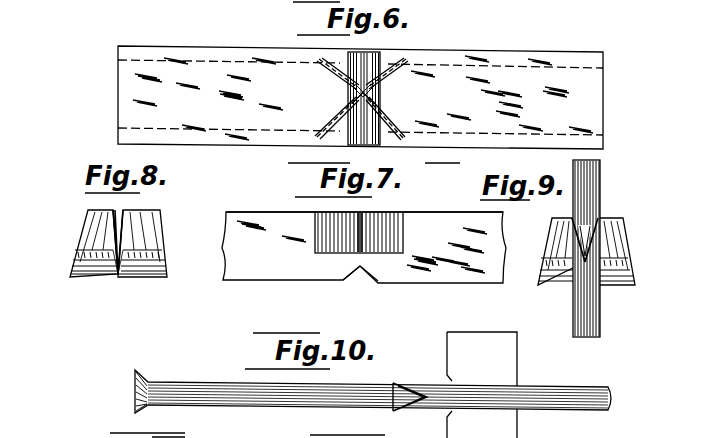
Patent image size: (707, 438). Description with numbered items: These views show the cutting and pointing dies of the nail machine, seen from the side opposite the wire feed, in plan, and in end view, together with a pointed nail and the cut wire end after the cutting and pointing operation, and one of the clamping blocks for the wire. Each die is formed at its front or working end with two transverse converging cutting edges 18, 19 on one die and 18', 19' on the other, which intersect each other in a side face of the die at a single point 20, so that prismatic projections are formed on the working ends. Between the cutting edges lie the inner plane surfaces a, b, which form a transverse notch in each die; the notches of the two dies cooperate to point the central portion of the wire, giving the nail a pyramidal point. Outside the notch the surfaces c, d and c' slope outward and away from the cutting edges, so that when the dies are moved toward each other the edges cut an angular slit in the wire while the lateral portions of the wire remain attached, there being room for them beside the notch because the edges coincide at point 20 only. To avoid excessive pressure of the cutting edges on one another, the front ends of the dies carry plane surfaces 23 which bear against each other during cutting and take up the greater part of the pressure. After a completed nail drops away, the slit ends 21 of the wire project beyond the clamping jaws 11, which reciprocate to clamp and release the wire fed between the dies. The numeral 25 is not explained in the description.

In FIG. 10, the clamping jaws 11 is at (502, 436).
In FIG. 6, the cutting edge 18 is at (307, 56).
In FIG. 7, the cutting edge 18 is at (319, 283).
In FIG. 8, the cutting edge 18 is at (94, 262).
In FIG. 9, the cutting edge 18 is at (553, 267).
In FIG. 6, the cutting edge 18' is at (418, 58).
In FIG. 6, the cutting edge 19 is at (307, 131).
In FIG. 8, the cutting edge 19 is at (163, 242).
In FIG. 9, the cutting edge 19 is at (628, 256).
In FIG. 6, the cutting edge 19' is at (405, 131).
In FIG. 7, the cutting edge 19' is at (392, 286).
In FIG. 6, the intersection point 20 is at (364, 98).
In FIG. 7, the intersection point 20 is at (362, 217).
In FIG. 8, the intersection point 20 is at (112, 209).
In FIG. 9, the slit ends 21 is at (600, 231).
In FIG. 10, the slit ends 21 is at (422, 388).
In FIG. 8, the plane surfaces 23 is at (78, 253).
In FIG. 9, the plane surfaces 23 is at (563, 260).
In FIG. 6, the element 25 is at (448, 6).
In FIG. 8, the inner surface a is at (118, 276).
In FIG. 9, the inner surface a is at (582, 265).
In FIG. 8, the inner surface b is at (133, 260).
In FIG. 9, the inner surface b is at (598, 262).
In FIG. 7, the inclined surface c is at (276, 206).
In FIG. 8, the inclined surface c is at (81, 243).
In FIG. 9, the inclined surface c is at (555, 246).
In FIG. 6, the inclined surface c' is at (477, 6).
In FIG. 7, the inclined surface c' is at (447, 212).
In FIG. 8, the inclined surface d is at (152, 228).
In FIG. 9, the inclined surface d is at (620, 235).